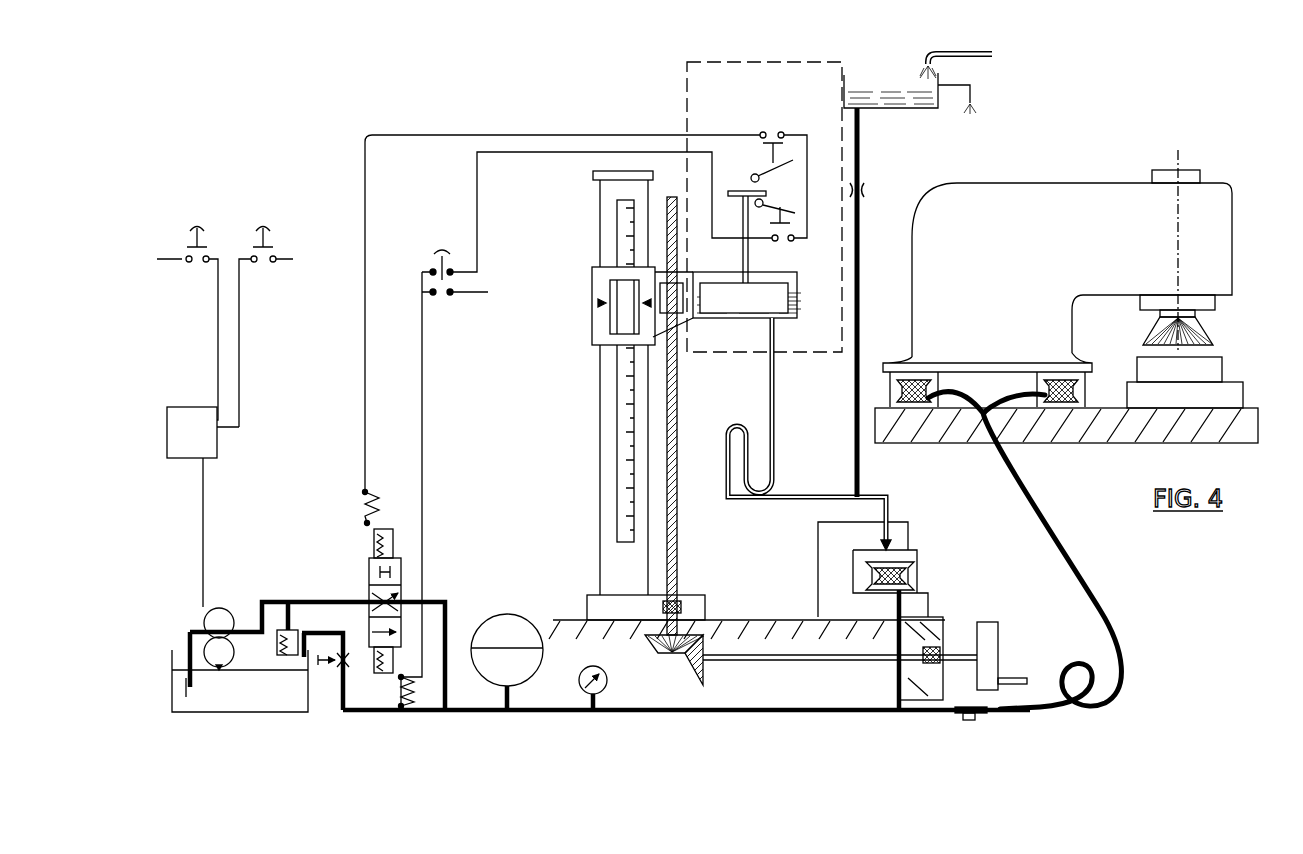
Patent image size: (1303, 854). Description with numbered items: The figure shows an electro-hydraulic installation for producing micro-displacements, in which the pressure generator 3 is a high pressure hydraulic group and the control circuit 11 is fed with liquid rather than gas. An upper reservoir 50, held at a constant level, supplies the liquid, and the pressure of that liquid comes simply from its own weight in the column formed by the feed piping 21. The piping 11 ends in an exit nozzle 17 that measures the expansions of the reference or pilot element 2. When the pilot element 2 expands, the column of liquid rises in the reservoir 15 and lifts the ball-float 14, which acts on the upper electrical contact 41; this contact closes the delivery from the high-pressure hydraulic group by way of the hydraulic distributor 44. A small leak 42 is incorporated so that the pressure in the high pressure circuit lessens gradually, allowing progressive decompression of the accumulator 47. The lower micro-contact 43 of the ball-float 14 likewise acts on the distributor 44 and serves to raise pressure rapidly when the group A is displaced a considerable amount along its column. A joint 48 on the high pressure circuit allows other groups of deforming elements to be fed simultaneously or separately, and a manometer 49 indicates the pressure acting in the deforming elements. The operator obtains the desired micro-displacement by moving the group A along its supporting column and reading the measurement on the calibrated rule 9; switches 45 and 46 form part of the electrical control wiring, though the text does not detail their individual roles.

The deforming element 2 is at (889, 611).
The pressure generator 3 is at (190, 632).
The calibrated rule 9 is at (597, 384).
The control circuit 11 is at (886, 504).
The ball-float 14 is at (760, 289).
The reservoir 15 is at (800, 305).
The exit nozzle 17 is at (912, 565).
The feed piping 21 is at (860, 172).
The upper electrical contact 41 is at (752, 174).
The leak 42 is at (341, 664).
The lower micro-contact 43 is at (763, 203).
The hydraulic distributor 44 is at (369, 572).
The push button switch 45 is at (440, 250).
The control switches 46 is at (254, 236).
The accumulator 47 is at (505, 614).
The joint 48 is at (1024, 567).
The manometer 49 is at (602, 684).
The upper reservoir 50 is at (965, 70).
The group A is at (772, 62).